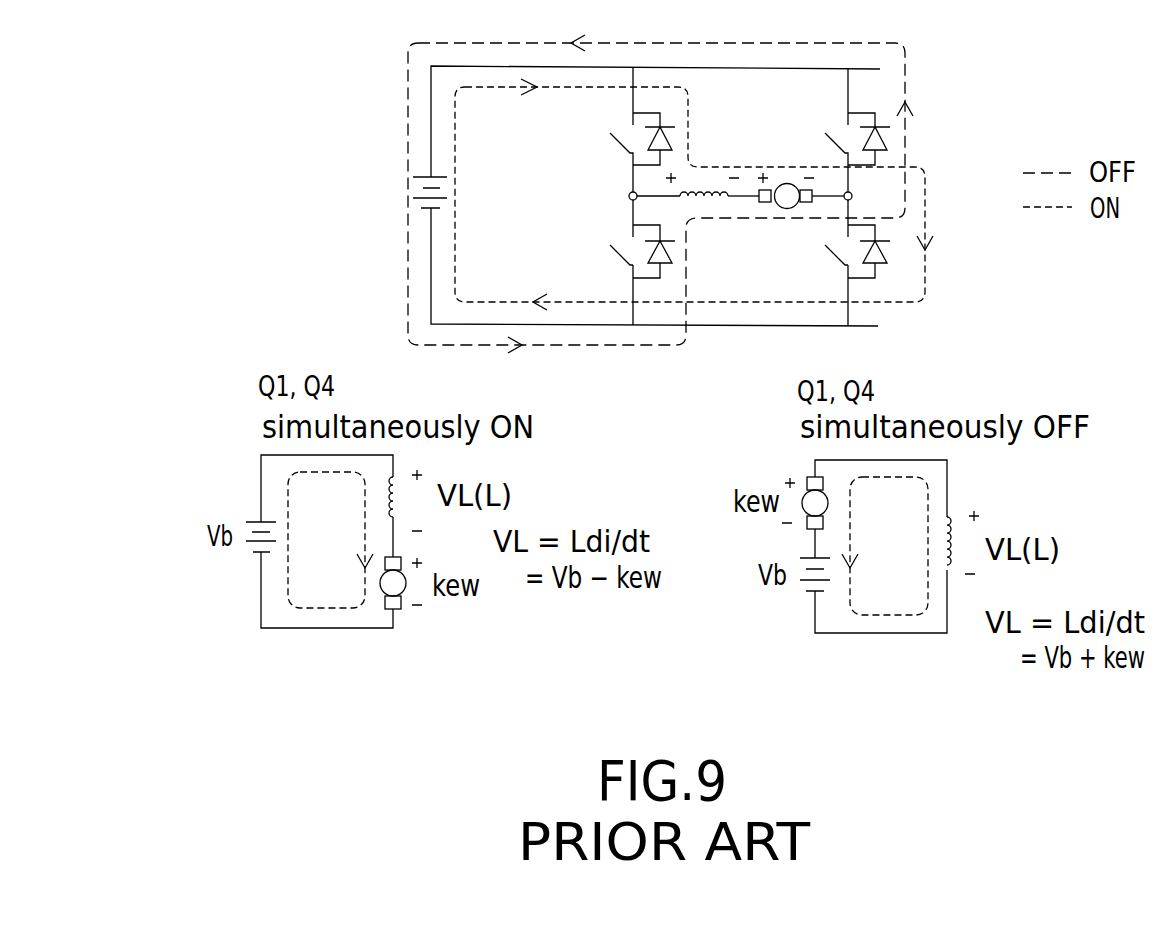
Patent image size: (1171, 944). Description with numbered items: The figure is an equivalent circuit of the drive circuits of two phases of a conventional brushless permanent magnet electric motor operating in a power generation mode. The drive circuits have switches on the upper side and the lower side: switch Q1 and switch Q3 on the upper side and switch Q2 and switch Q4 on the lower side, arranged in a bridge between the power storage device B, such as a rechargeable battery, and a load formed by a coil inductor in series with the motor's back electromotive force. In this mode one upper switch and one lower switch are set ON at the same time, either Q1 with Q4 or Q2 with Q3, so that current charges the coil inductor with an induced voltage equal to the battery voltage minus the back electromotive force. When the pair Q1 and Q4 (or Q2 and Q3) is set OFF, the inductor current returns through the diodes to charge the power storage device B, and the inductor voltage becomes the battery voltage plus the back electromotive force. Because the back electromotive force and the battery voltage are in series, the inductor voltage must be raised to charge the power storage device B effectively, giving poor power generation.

The power storage device B is at (416, 166).
The switch Q1 is at (622, 152).
The switch Q2 is at (622, 239).
The switch Q3 is at (838, 152).
The switch Q4 is at (838, 239).